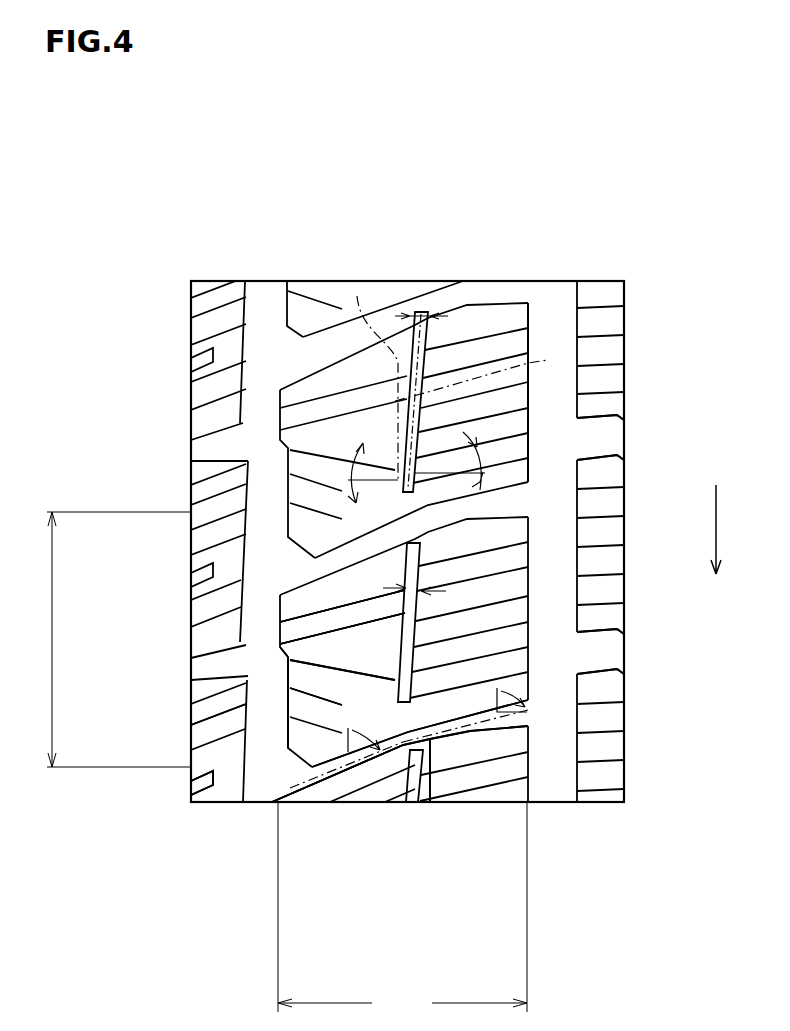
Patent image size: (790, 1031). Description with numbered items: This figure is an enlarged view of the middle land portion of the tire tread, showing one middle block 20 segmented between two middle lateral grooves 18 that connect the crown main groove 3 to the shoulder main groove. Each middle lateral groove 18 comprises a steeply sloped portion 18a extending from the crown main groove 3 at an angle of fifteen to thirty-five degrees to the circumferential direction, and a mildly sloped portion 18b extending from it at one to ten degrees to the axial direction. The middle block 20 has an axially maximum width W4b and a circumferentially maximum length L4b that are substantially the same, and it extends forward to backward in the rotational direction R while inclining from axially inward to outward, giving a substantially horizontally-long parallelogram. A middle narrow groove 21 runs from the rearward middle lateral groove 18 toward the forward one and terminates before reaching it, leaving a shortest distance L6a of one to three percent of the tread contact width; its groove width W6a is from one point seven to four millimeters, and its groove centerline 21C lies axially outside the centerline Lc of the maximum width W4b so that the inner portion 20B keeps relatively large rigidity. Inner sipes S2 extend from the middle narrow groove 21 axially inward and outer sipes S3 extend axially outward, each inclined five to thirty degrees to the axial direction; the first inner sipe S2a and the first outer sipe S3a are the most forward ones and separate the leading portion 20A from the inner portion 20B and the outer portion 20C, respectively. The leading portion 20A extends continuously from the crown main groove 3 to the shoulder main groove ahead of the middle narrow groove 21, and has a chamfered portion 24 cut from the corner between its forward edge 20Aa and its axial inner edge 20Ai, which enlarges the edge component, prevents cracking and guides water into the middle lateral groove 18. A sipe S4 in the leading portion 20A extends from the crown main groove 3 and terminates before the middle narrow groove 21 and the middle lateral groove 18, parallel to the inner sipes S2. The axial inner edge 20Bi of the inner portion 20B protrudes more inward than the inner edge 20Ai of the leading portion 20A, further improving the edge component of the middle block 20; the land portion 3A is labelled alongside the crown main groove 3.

The crown main groove 3 is at (273, 298).
The left land portion 3A is at (297, 524).
The middle lateral groove 18 is at (462, 299).
The steeply sloped portion 18a is at (366, 774).
The mildly sloped portion 18b is at (470, 745).
The middle narrow groove 21 is at (430, 395).
The groove centerline 21C is at (548, 360).
The centerline of the maximum width Lc is at (357, 296).
The outer sipe S3 is at (485, 338).
The first outer sipe S3a is at (527, 437).
The inner sipe S2 is at (280, 408).
The first inner sipe S2a is at (246, 666).
The sipe S4 is at (200, 737).
The middle block 20 is at (125, 601).
The leading portion 20A is at (288, 672).
The inner portion 20B is at (280, 630).
The outer portion 20C is at (283, 651).
The axial inner edge of the inner portion 20Bi is at (280, 617).
The axial inner edge of the leading portion 20Ai is at (356, 687).
The forward edge 20Aa is at (336, 765).
The chamfered portion 24 is at (205, 758).
The groove width of the middle narrow groove W6a is at (403, 580).
The axially maximum width W4b is at (402, 908).
The circumferentially maximum length L4b is at (110, 639).
The shortest distance L6a is at (433, 790).
The rotational direction R is at (724, 529).